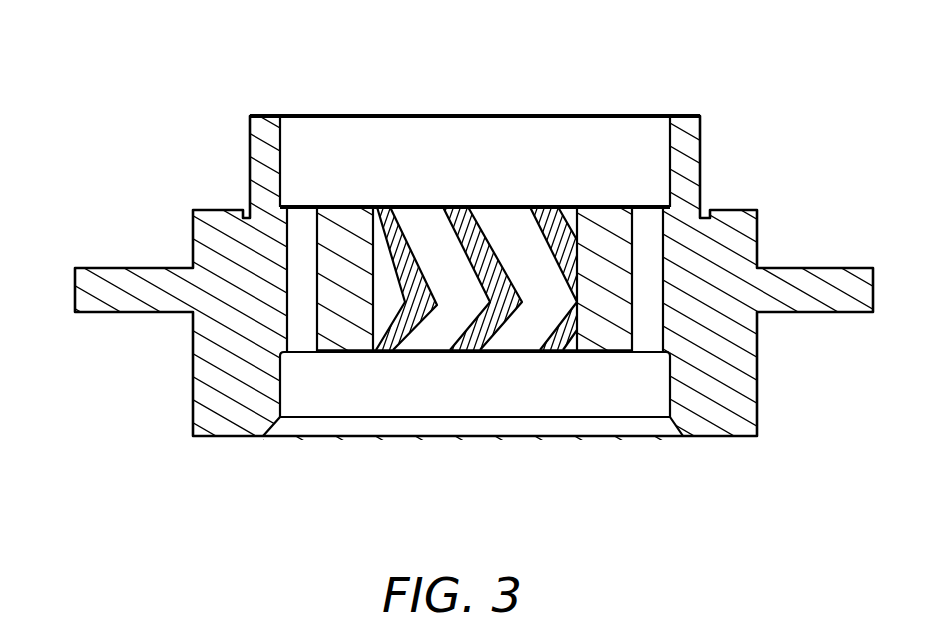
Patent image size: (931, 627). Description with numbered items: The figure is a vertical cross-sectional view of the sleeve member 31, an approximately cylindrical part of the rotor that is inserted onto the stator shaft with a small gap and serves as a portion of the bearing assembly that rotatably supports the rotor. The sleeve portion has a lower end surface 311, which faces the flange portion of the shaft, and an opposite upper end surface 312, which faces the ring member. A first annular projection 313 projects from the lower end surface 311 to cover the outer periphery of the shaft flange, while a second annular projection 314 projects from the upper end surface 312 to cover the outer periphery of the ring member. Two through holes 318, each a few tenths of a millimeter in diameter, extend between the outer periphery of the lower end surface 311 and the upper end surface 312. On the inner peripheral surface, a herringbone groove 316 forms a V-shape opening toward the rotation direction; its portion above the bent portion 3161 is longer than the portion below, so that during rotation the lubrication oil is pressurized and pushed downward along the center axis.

The sleeve member 31 is at (86, 60).
The lower end surface 311 is at (350, 354).
The upper end surface 312 is at (342, 207).
The first annular projection 313 is at (230, 377).
The second annular projection 314 is at (263, 153).
The herringbone groove 316 is at (494, 278).
The bent portion 3161 is at (508, 315).
The through hole 318 is at (303, 341).